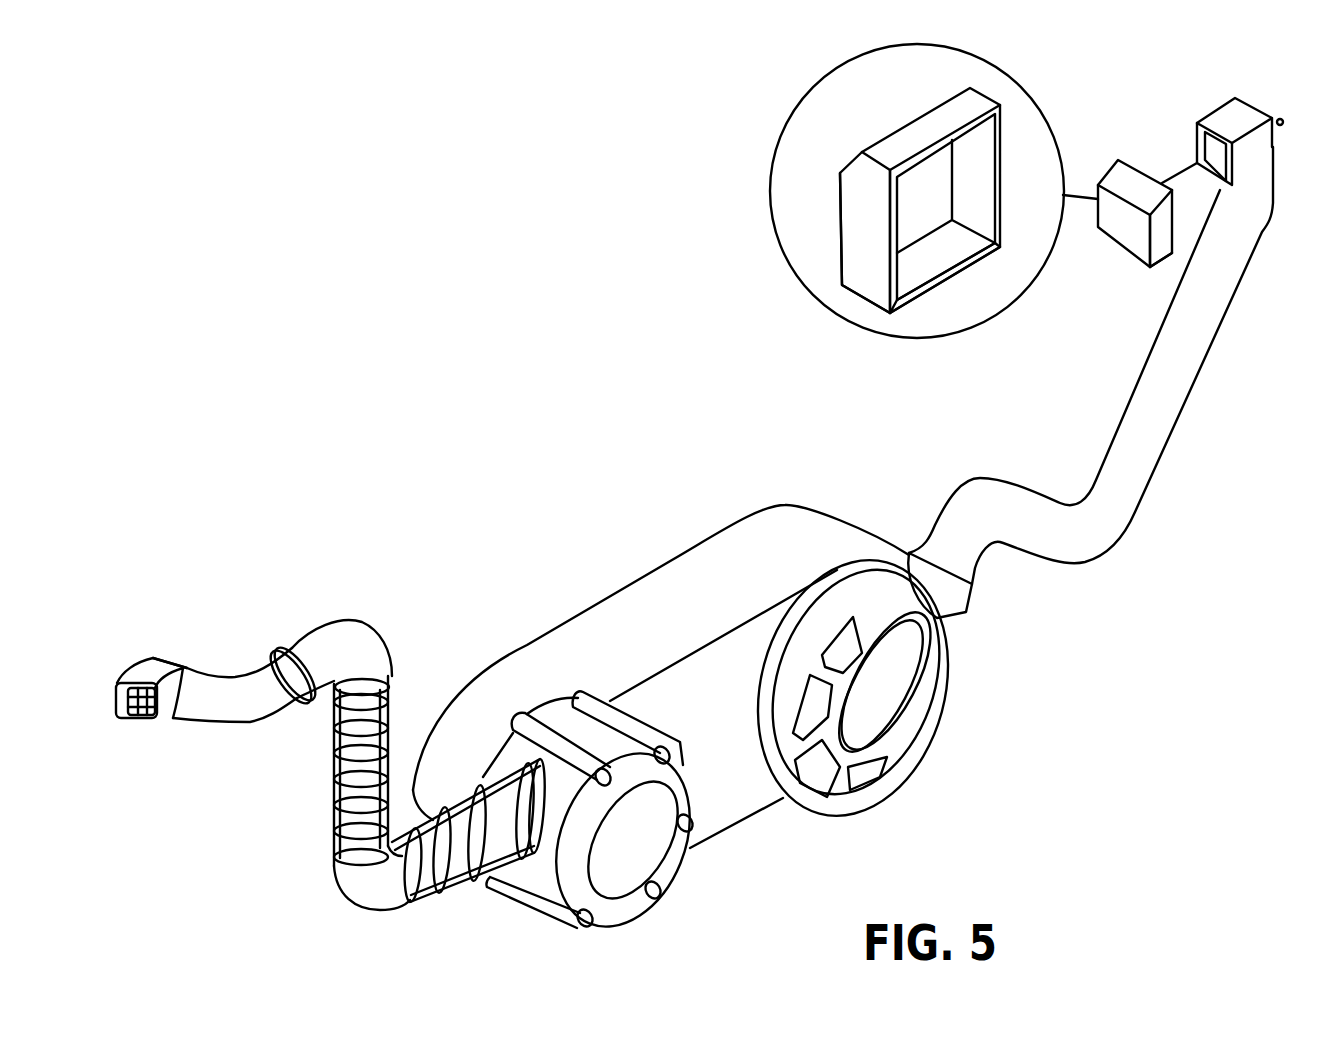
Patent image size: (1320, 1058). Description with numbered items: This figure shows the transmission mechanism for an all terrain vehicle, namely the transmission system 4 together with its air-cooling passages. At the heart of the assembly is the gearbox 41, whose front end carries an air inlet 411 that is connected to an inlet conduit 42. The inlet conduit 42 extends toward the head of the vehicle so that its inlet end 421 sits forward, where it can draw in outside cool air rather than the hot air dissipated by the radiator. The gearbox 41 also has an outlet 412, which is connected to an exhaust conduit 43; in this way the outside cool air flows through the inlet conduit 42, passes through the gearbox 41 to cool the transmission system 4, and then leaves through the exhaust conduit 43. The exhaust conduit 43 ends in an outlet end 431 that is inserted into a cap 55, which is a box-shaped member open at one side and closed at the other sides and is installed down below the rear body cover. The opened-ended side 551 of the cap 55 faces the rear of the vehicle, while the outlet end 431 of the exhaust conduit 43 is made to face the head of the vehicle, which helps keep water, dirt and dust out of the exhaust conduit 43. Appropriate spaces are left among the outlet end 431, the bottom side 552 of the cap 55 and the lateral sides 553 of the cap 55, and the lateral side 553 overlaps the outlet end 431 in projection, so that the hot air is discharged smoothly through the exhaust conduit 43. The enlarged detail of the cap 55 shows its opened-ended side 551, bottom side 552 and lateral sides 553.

The transmission system 4 is at (568, 483).
The gearbox 41 is at (713, 823).
The air inlet 411 is at (547, 770).
The outlet 412 is at (967, 602).
The inlet conduit 42 is at (347, 762).
The inlet end 421 is at (143, 720).
The exhaust conduit 43 is at (1177, 382).
The outlet end 431 is at (1213, 150).
The cap 55 is at (892, 143).
The opened-ended side 551 is at (940, 187).
The bottom side 552 is at (933, 272).
The lateral sides 553 is at (857, 212).